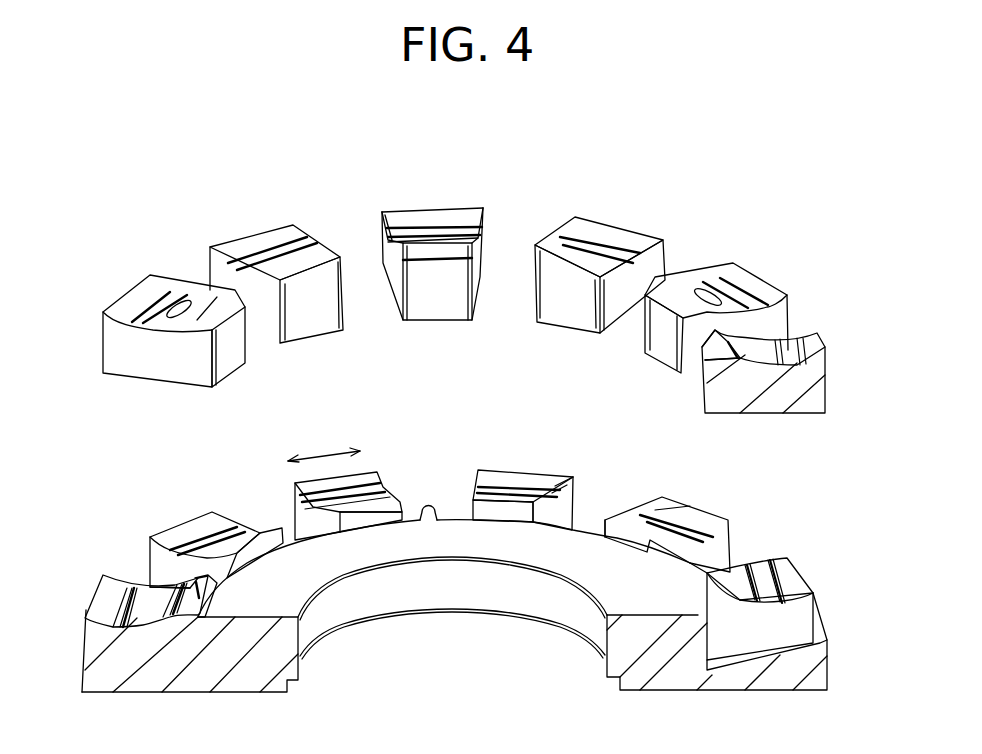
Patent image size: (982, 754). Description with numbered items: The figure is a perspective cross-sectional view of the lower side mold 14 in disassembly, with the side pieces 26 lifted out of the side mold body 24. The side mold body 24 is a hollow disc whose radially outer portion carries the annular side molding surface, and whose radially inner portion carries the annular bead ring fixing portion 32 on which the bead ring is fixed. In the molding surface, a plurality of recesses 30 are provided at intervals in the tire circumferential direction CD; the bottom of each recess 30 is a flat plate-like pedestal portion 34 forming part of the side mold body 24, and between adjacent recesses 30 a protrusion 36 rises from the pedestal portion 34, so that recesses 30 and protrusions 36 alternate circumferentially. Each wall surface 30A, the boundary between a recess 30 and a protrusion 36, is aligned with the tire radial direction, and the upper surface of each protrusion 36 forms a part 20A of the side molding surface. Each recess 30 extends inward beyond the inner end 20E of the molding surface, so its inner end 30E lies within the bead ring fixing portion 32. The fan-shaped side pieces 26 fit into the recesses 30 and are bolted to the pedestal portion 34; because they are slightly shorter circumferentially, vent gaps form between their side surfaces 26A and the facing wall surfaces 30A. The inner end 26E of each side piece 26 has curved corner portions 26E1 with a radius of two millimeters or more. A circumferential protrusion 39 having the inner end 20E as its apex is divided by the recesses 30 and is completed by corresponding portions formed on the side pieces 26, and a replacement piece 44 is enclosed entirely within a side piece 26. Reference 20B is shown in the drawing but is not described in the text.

The side mold 14 is at (470, 144).
The part of the side molding surface 20A is at (182, 530).
The second core piece 20B is at (396, 212).
The inner end in the tire radial direction of the side molding surface 20E is at (548, 490).
The side mold body 24 is at (345, 617).
The side piece 26 is at (132, 295).
The side surface 26A is at (133, 370).
The inner end in the tire radial direction of the side piece 26E is at (237, 353).
The corner portion 26E1 is at (215, 387).
The recess 30 is at (130, 570).
The wall surface 30A is at (150, 560).
The inner end in the tire radial direction of the recess 30E is at (427, 520).
The bead ring fixing portion 32 is at (507, 553).
The pedestal portion 34 is at (737, 683).
The protrusion 36 is at (100, 593).
The protrusion 39 is at (398, 480).
The replacement piece 44 is at (187, 293).
The tire circumferential direction CD is at (333, 452).